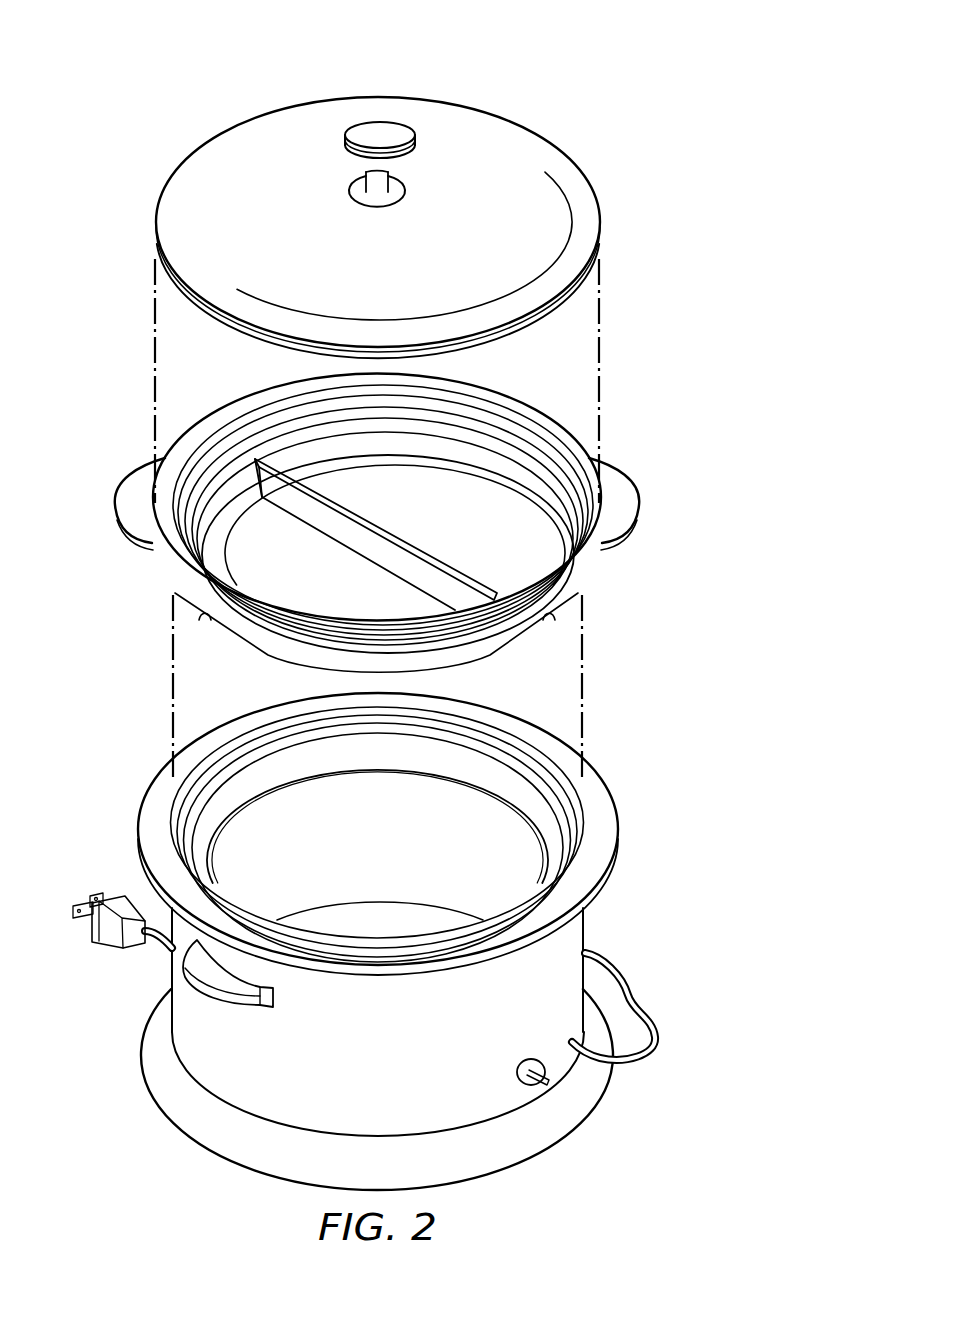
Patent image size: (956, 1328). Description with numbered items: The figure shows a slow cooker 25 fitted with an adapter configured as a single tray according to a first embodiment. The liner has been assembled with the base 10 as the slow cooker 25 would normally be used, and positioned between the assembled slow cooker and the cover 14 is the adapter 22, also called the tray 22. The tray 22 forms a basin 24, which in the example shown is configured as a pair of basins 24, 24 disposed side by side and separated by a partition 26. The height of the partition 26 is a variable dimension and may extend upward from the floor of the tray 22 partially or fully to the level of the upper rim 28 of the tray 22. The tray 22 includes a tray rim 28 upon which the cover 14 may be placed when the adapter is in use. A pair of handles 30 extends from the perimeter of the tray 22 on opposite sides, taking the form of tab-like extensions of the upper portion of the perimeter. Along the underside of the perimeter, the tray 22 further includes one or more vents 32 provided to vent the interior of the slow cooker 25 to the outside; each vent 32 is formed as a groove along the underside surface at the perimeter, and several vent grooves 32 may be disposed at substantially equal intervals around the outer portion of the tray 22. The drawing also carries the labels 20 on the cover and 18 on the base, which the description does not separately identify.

The slow cooker 25 is at (500, 70).
The cover 14 is at (205, 165).
The lid rim 20 is at (228, 323).
The adapter 22 is at (513, 642).
The tray rim 28 is at (547, 425).
The basin 24 is at (317, 585).
The partition 26 is at (392, 557).
The handles 30 is at (135, 485).
The vent 32 is at (205, 615).
The base rim 18 is at (597, 802).
The base 10 is at (585, 928).